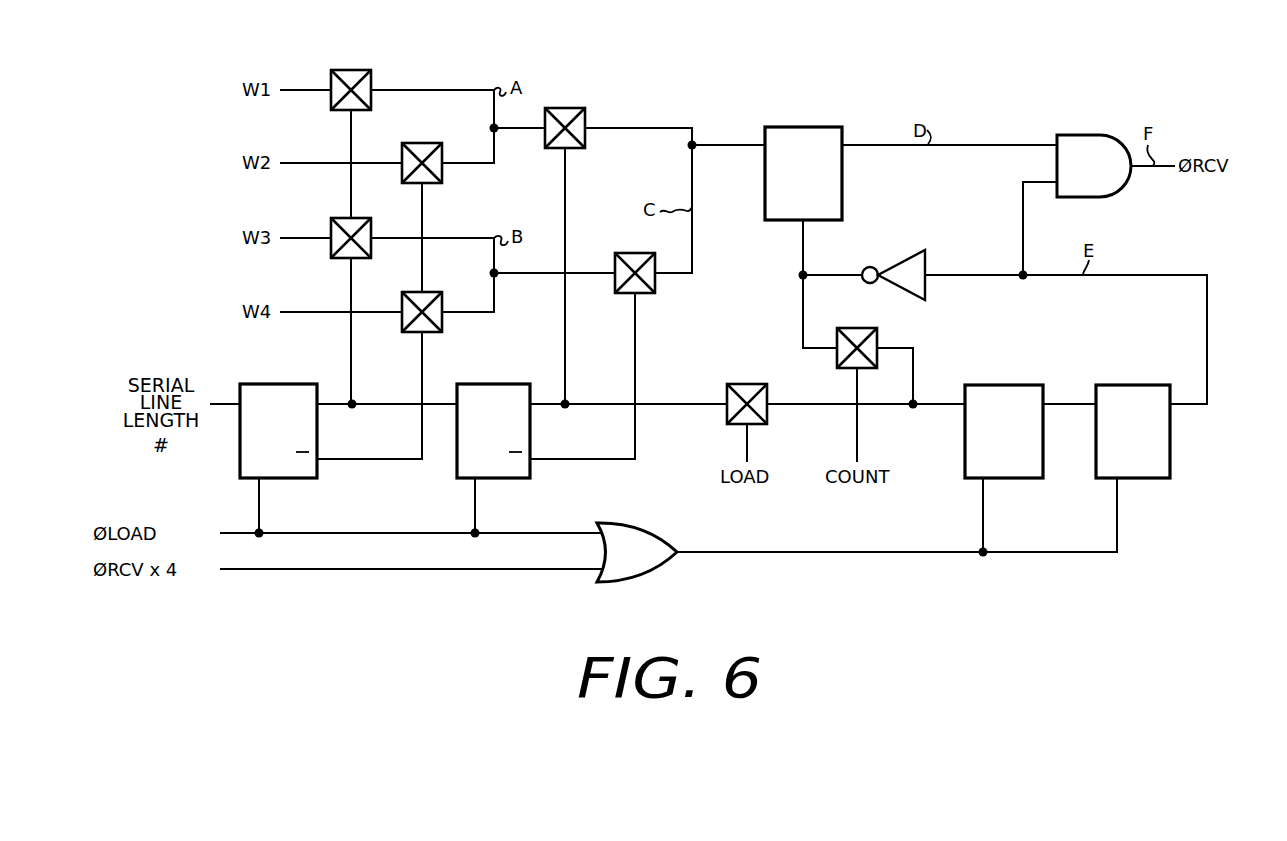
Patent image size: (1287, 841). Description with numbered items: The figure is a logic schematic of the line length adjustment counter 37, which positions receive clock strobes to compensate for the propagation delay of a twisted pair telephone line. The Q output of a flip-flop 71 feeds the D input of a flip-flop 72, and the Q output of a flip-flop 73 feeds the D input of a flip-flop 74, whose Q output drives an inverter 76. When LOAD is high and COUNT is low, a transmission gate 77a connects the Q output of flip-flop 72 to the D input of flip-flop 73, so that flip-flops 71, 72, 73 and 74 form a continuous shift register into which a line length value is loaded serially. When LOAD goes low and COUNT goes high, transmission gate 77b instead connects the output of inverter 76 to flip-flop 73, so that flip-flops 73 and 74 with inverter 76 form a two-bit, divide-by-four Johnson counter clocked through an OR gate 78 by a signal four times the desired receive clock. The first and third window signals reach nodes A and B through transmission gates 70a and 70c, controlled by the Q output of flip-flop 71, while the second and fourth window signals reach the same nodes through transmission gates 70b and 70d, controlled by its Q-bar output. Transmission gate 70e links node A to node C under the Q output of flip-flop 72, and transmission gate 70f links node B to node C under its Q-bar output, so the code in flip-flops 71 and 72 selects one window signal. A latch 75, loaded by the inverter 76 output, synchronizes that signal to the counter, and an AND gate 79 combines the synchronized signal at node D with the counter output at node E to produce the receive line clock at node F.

The transmission gate 70a is at (353, 70).
The transmission gate 70b is at (442, 178).
The transmission gate 70c is at (342, 218).
The transmission gate 70d is at (442, 327).
The transmission gate 70e is at (566, 108).
The transmission gate 70f is at (647, 293).
The flip-flop 71 is at (298, 478).
The flip-flop 72 is at (511, 478).
The flip-flop 73 is at (1004, 385).
The flip-flop 74 is at (1137, 385).
The latch 75 is at (803, 127).
The inverter 76 is at (904, 260).
The transmission gate 77a is at (755, 384).
The transmission gate 77b is at (885, 317).
The OR gate 78 is at (667, 510).
The AND gate 79 is at (1082, 135).
The line length adjustment counter 37 is at (1110, 559).